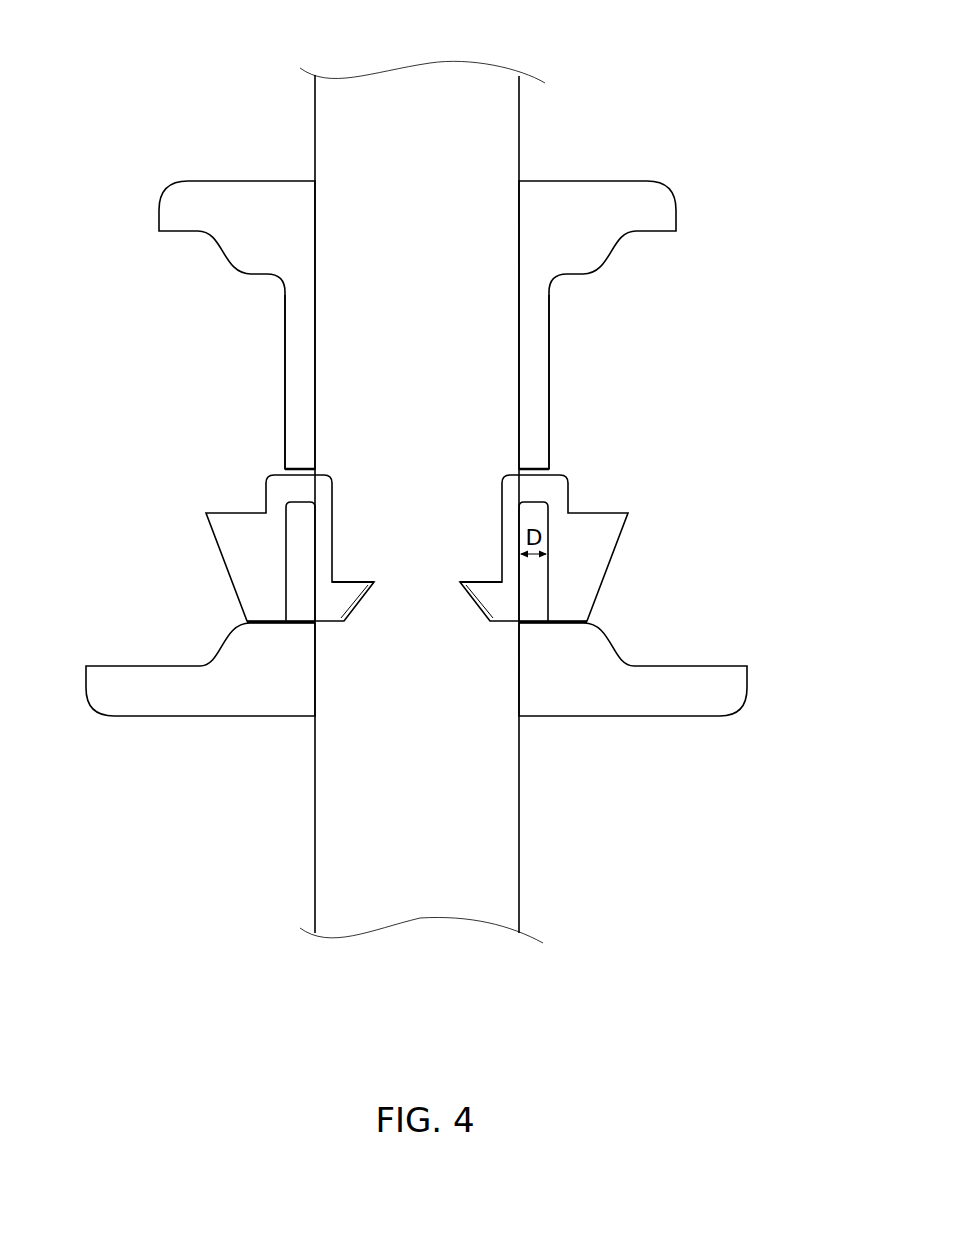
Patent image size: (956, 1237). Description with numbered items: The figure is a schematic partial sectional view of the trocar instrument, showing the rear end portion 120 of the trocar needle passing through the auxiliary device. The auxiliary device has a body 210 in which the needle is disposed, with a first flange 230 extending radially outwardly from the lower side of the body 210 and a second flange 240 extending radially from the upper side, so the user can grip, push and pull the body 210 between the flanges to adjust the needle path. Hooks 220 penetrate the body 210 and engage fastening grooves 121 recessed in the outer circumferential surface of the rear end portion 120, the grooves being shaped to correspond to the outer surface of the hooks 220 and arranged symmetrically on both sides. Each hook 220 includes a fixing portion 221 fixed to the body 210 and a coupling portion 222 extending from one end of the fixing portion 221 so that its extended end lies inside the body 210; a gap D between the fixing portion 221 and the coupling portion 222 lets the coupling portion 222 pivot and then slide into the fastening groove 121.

The rear end portion 120 is at (437, 80).
The fastening grooves 121 is at (476, 583).
The body 210 is at (536, 332).
The hooks 220 is at (496, 543).
The fixing portion 221 is at (602, 531).
The coupling portion 222 is at (485, 600).
The first flange 230 is at (710, 702).
The second flange 240 is at (652, 197).